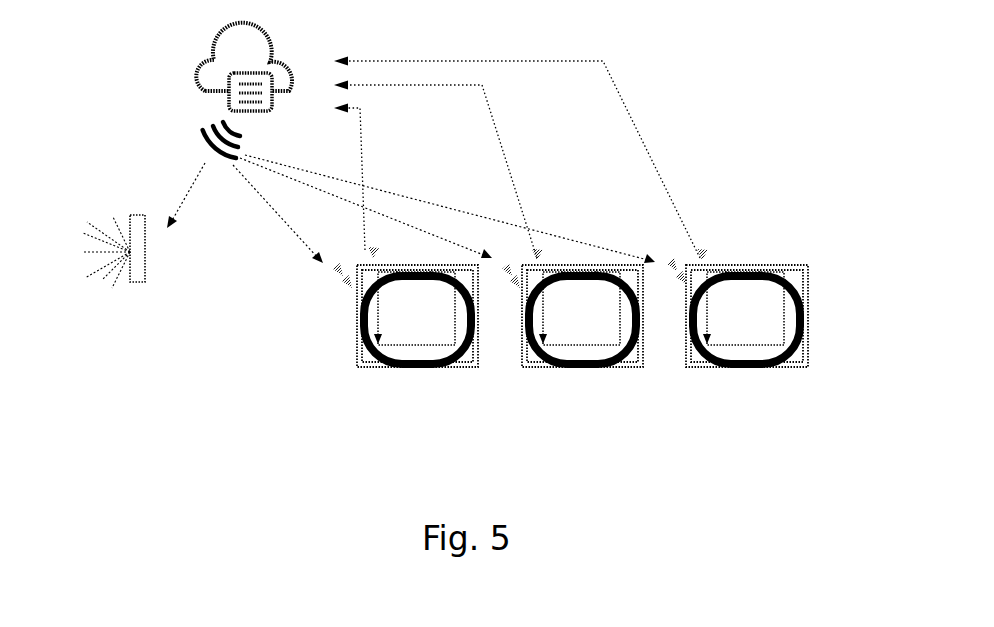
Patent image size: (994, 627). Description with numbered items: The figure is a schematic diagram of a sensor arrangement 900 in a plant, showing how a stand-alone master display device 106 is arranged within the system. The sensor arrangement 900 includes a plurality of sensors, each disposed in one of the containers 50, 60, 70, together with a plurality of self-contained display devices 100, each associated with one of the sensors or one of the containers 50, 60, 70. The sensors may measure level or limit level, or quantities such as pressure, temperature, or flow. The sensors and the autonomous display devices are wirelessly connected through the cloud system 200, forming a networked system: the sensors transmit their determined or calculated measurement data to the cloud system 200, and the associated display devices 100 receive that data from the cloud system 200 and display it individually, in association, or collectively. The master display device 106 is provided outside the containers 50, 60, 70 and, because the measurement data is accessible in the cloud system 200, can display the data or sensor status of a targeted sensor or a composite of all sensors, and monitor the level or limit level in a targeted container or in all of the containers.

The sensor arrangement 900 is at (702, 95).
The cloud system 200 is at (277, 40).
The self-contained display device 100 is at (355, 288).
The master display device 106 is at (134, 283).
The container 50 is at (410, 370).
The container 60 is at (570, 370).
The container 70 is at (743, 370).